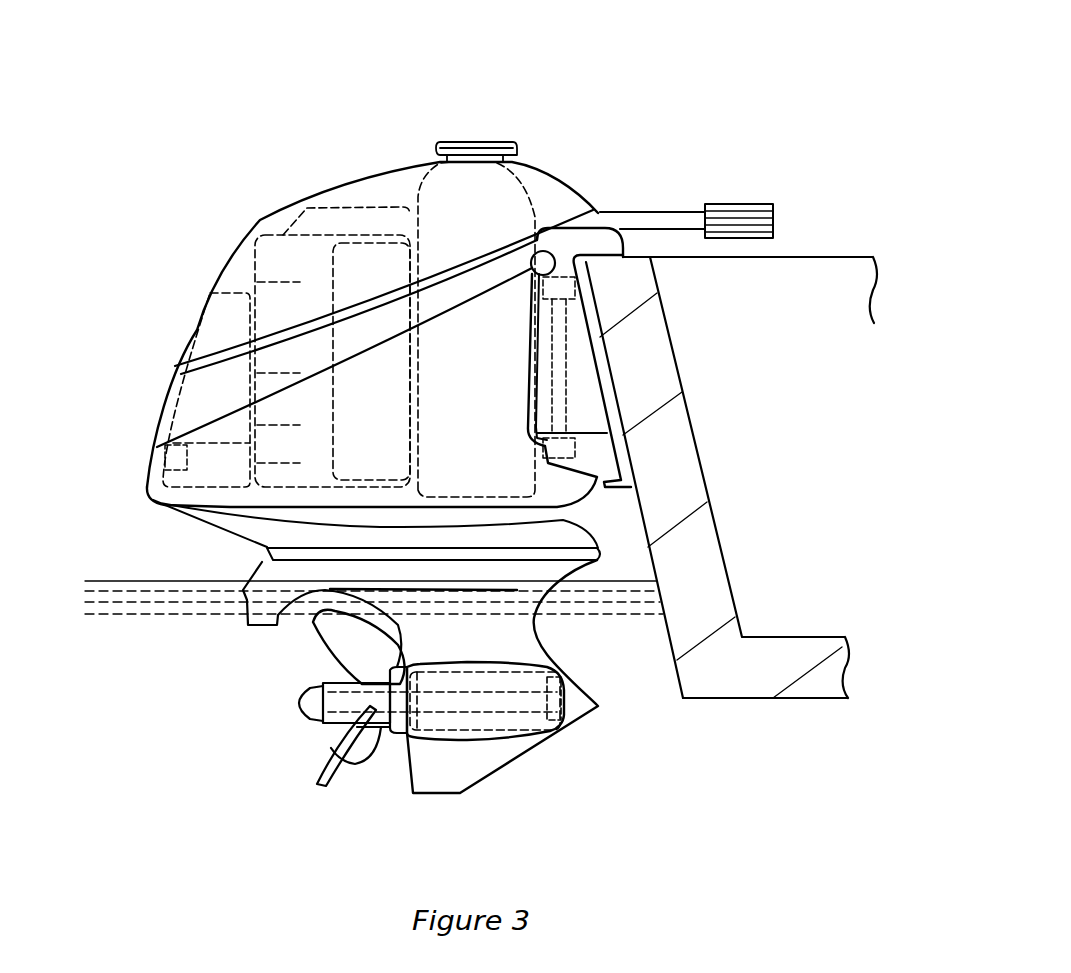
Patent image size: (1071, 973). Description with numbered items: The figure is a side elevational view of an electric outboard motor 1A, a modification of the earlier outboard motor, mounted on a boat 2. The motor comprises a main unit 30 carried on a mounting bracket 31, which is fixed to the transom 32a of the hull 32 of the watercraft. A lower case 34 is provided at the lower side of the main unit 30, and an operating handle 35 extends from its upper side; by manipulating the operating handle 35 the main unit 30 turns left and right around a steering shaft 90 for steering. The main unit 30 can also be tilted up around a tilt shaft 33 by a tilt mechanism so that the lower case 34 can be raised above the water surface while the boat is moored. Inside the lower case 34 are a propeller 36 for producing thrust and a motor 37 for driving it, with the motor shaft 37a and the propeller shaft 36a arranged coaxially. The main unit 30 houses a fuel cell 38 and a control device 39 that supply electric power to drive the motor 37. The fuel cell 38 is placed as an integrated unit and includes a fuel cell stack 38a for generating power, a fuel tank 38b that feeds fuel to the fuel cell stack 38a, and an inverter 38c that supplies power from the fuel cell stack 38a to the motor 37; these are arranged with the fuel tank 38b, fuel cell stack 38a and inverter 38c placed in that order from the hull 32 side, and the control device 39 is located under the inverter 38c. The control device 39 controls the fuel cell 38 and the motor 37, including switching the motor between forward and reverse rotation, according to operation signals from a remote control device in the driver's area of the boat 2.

The electric outboard motor 1A is at (660, 35).
The boat 2 is at (864, 236).
The main unit 30 is at (213, 550).
The mounting bracket 31 is at (600, 243).
The hull 32 is at (760, 704).
The transom 32a is at (660, 372).
The tilt shaft 33 is at (548, 255).
The lower case 34 is at (522, 640).
The operating handle 35 is at (672, 222).
The propeller 36 is at (347, 763).
The propeller shaft 36a is at (380, 717).
The motor 37 is at (490, 720).
The motor shaft 37a is at (547, 717).
The fuel cell 38 is at (257, 222).
The fuel cell stack 38a is at (340, 213).
The fuel tank 38b is at (513, 160).
The inverter 38c is at (220, 333).
The control device 39 is at (163, 467).
The steering shaft 90 is at (567, 312).